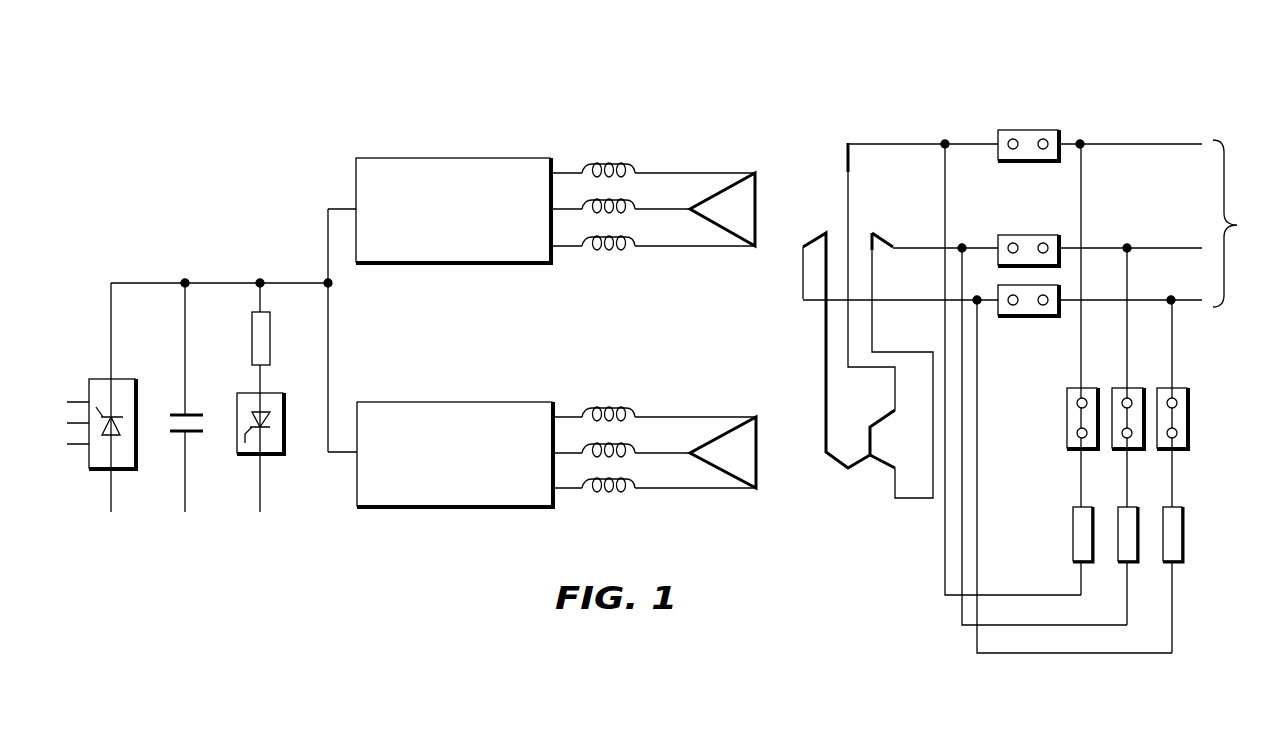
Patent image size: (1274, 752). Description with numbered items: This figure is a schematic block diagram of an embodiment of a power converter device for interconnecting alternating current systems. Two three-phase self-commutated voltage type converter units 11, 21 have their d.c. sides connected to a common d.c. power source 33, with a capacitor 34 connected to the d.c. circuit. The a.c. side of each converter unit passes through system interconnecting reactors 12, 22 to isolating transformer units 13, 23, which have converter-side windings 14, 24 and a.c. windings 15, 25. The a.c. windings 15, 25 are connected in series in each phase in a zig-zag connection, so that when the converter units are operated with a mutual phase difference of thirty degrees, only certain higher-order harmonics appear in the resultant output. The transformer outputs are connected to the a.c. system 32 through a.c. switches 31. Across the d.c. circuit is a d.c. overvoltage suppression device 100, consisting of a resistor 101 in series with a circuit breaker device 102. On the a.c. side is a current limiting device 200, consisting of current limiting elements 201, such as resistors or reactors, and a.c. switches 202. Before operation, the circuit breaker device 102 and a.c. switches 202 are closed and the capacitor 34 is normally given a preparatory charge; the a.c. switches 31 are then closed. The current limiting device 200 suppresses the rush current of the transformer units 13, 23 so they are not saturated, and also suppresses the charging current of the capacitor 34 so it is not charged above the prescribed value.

The self-commutated voltage type converter unit 11 is at (426, 254).
The system interconnecting reactor 12 is at (617, 262).
The isolating transformer unit 13 is at (794, 154).
The winding of transformer unit 14 is at (727, 252).
The a.c. winding 15 is at (850, 135).
The self-commutated voltage type converter unit 21 is at (470, 402).
The system interconnecting reactor 22 is at (630, 378).
The isolating transformer unit 23 is at (811, 514).
The winding of transformer unit 24 is at (732, 413).
The a.c. winding 25 is at (872, 470).
The a.c. switch 31 is at (1043, 132).
The a.c. system 32 is at (1034, 223).
The d.c. power source 33 is at (124, 457).
The capacitor 34 is at (184, 412).
The d.c. overvoltage suppression device 100 is at (271, 552).
The resistor 101 is at (262, 338).
The circuit breaker device 102 is at (275, 445).
The current limiting device 200 is at (1246, 491).
The current limiting element 201 is at (1175, 545).
The a.c. switch 202 is at (1187, 403).